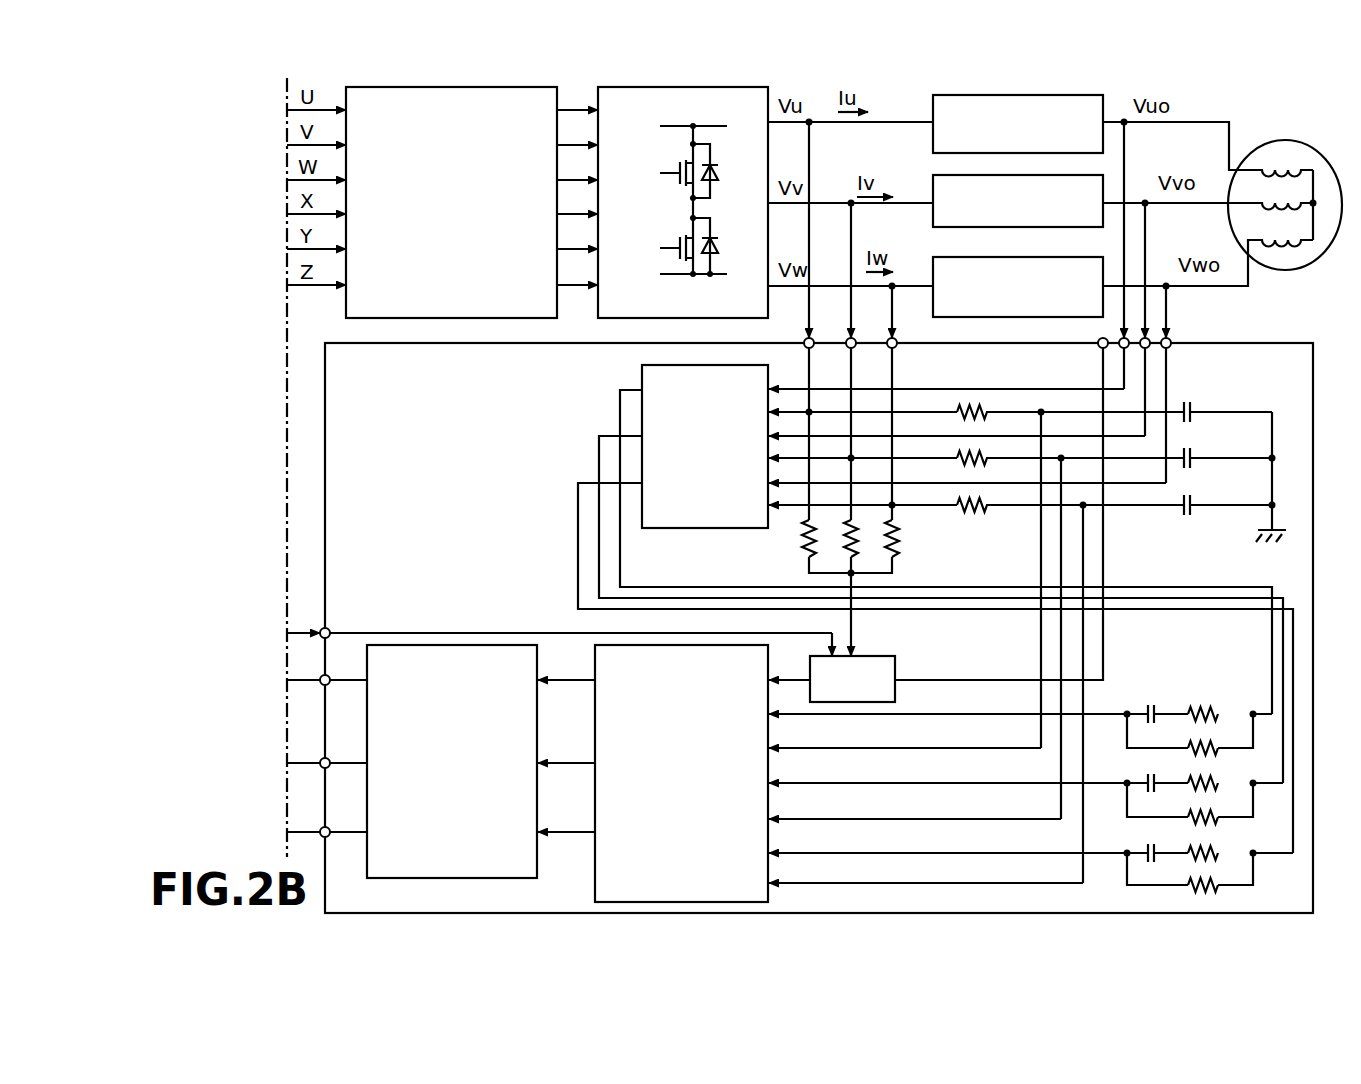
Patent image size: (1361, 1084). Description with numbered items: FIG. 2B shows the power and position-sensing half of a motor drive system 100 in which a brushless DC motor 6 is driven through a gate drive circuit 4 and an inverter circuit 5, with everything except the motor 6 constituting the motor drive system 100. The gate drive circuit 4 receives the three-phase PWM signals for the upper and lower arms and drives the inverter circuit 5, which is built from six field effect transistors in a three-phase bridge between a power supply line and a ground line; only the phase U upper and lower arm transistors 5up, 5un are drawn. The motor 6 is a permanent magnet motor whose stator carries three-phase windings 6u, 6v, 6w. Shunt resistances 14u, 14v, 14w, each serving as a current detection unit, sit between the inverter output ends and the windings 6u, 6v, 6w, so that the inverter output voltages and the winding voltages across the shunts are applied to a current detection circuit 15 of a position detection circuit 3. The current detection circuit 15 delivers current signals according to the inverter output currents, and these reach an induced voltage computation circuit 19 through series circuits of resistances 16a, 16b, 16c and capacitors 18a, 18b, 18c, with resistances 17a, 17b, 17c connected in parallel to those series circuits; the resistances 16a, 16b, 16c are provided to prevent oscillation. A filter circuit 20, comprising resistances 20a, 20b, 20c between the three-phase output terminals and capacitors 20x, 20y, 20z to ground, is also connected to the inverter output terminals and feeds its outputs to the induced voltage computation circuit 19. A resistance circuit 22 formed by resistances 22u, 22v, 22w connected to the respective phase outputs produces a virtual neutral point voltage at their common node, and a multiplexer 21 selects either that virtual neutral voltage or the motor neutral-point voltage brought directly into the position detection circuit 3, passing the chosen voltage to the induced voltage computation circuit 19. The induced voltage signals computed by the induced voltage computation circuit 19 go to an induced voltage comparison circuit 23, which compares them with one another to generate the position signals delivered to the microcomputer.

The motor drive system 100 is at (788, 92).
The position detection circuit 3 is at (1262, 343).
The gate drive circuit 4 is at (346, 308).
The inverter circuit 5 is at (667, 211).
The FET constituting phase U upper arm 5up is at (681, 165).
The FET constituting phase U lower arm 5un is at (681, 236).
The brushless DC motor 6 is at (1264, 183).
The phase U winding 6u is at (1272, 165).
The phase V winding 6v is at (1262, 200).
The phase W winding 6w is at (1262, 235).
The shunt resistance 14u is at (933, 113).
The shunt resistance 14v is at (933, 190).
The shunt resistance 14w is at (933, 267).
The current detection circuit 15 is at (663, 530).
The resistance 16a is at (1203, 704).
The resistance 16b is at (1212, 776).
The resistance 16c is at (1220, 858).
The resistance 17a is at (1220, 742).
The resistance 17b is at (1218, 820).
The resistance 17c is at (1190, 889).
The capacitor 18a is at (1150, 702).
The capacitor 18b is at (1148, 777).
The capacitor 18c is at (1148, 849).
The induced voltage computation circuit 19 is at (595, 860).
The filter circuit 20 is at (1233, 446).
The resistance 20a is at (962, 405).
The resistance 20b is at (988, 456).
The resistance 20c is at (988, 508).
The capacitor 20x is at (1200, 412).
The capacitor 20y is at (1200, 458).
The capacitor 20z is at (1200, 504).
The multiplexer 21 is at (895, 668).
The resistance circuit 22 is at (845, 464).
The resistance 22u is at (800, 538).
The resistance 22v is at (858, 545).
The resistance 22w is at (900, 542).
The induced voltage comparison circuit 23 is at (537, 875).